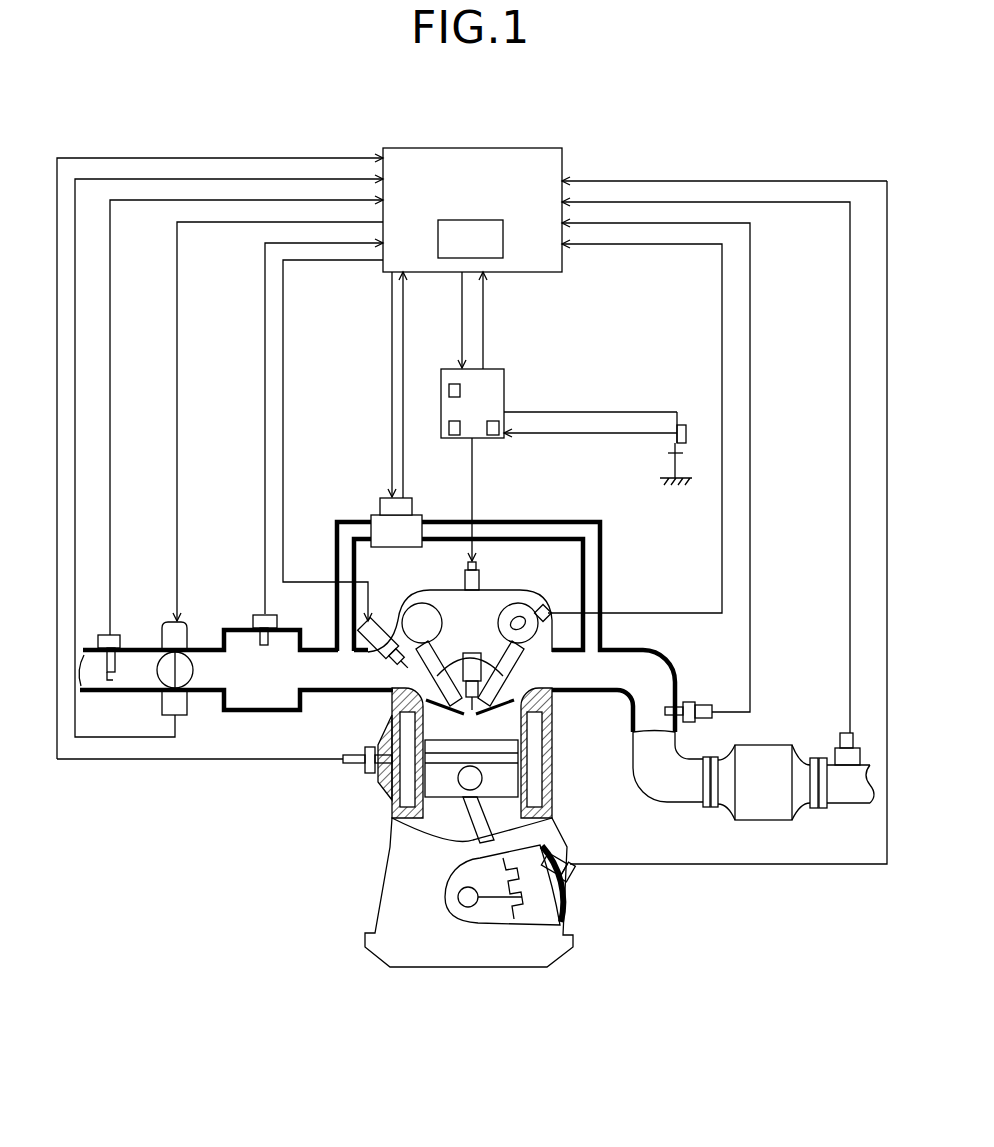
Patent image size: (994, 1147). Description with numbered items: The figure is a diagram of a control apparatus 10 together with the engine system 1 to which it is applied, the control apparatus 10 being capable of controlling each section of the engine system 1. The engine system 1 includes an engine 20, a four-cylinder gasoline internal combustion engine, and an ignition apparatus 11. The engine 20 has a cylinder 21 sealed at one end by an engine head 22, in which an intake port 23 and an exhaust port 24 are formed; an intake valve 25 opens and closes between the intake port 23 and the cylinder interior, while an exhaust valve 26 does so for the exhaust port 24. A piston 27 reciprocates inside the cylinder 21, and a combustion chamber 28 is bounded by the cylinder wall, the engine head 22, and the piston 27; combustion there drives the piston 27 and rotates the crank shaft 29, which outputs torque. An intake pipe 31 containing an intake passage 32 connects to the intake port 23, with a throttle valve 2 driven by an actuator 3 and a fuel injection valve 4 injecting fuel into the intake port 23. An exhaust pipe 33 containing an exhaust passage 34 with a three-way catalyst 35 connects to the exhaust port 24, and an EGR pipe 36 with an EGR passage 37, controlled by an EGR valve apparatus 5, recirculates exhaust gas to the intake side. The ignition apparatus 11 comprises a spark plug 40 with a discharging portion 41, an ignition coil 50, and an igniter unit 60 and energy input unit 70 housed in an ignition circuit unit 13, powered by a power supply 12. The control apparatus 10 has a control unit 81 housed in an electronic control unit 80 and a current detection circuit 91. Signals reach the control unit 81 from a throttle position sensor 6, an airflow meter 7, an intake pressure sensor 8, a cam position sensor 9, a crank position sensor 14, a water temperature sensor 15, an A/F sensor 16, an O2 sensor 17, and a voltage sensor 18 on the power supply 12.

The engine system 1 is at (317, 978).
The throttle valve 2 is at (160, 668).
The actuator 3 is at (167, 625).
The fuel injection valve 4 is at (378, 624).
The EGR valve apparatus 5 is at (378, 516).
The throttle position sensor 6 is at (188, 703).
The airflow meter 7 is at (103, 635).
The intake pressure sensor 8 is at (253, 620).
The cam position sensor 9 is at (545, 608).
The control apparatus 10 is at (577, 127).
The ignition apparatus 11 is at (512, 357).
The power supply 12 is at (660, 447).
The ignition circuit unit 13 is at (499, 369).
The crank position sensor 14 is at (557, 853).
The water temperature sensor 15 is at (368, 774).
The A/F sensor 16 is at (692, 702).
The O2 sensor 17 is at (838, 754).
The voltage sensor 18 is at (683, 424).
The engine 20 is at (378, 890).
The cylinder 21 is at (546, 775).
The engine head 22 is at (447, 597).
The intake port 23 is at (408, 700).
The exhaust port 24 is at (548, 705).
The intake valve 25 is at (390, 741).
The exhaust valve 26 is at (548, 738).
The piston 27 is at (546, 787).
The combustion chamber 28 is at (546, 762).
The crank shaft 29 is at (545, 890).
The intake pipe 31 is at (205, 645).
The intake passage 32 is at (218, 665).
The exhaust pipe 33 is at (618, 647).
The exhaust passage 34 is at (630, 672).
The three-way catalyst 35 is at (768, 747).
The EGR pipe 36 is at (533, 512).
The EGR passage 37 is at (568, 518).
The spark plug 40 is at (470, 655).
The discharging portion 41 is at (451, 778).
The ignition coil 50 is at (479, 580).
The igniter unit 60 is at (492, 436).
The energy input unit 70 is at (454, 436).
The electronic control unit 80 is at (448, 153).
The control unit 81 is at (446, 250).
The current detection circuit 91 is at (450, 385).